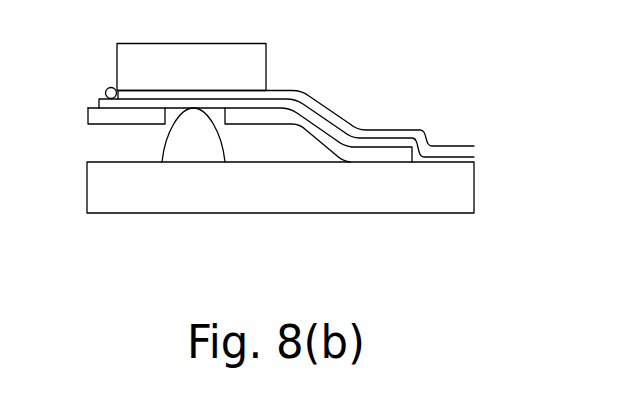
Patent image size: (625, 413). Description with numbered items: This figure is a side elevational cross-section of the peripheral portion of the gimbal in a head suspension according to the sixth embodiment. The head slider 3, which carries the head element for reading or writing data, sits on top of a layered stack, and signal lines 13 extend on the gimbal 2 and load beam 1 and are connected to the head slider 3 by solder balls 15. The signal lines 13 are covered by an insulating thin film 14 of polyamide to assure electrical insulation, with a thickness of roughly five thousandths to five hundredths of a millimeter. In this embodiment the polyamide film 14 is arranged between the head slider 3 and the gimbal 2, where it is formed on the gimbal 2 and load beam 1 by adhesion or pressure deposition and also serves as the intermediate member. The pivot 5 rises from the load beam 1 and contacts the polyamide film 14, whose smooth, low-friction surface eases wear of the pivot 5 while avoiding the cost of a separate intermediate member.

The load beam 1 is at (275, 200).
The gimbal 2 is at (338, 144).
The head slider 3 is at (215, 53).
The pivot 5 is at (193, 148).
The signal lines 13 is at (322, 106).
The insulating thin film 14 is at (284, 90).
The solder balls 15 is at (107, 88).